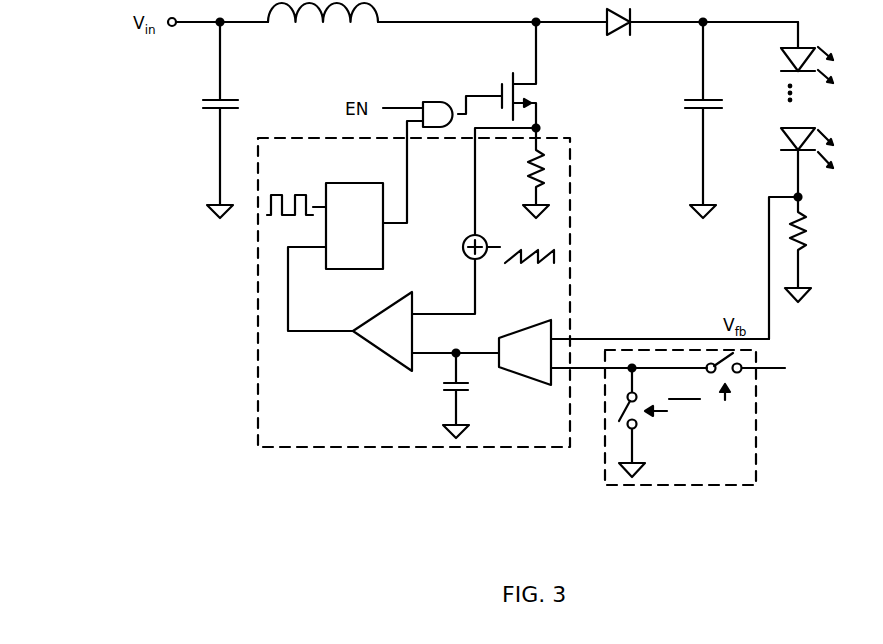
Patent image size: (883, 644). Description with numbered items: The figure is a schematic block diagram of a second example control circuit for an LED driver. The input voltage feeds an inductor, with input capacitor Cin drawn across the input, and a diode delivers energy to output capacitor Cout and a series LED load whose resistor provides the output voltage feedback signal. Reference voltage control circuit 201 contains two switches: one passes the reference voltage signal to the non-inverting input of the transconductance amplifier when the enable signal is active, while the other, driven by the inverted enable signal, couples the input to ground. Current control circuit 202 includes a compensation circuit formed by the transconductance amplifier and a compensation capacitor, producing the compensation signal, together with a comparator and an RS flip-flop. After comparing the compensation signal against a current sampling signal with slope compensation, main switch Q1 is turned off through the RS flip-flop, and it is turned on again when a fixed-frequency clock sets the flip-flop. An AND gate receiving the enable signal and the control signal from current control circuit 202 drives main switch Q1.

The reference voltage control circuit 201 is at (756, 470).
The current control circuit 202 is at (258, 390).
The main switch Q1 is at (535, 75).
The input capacitor Cin is at (202, 120).
The output capacitor Cout is at (687, 120).